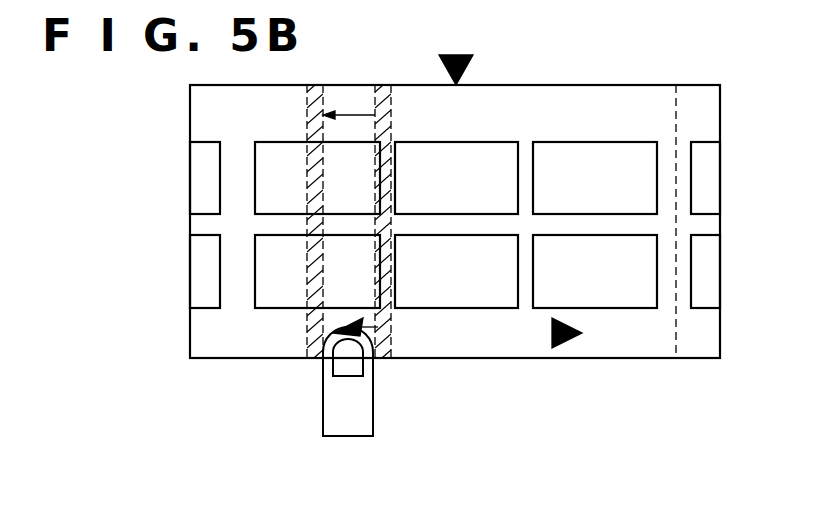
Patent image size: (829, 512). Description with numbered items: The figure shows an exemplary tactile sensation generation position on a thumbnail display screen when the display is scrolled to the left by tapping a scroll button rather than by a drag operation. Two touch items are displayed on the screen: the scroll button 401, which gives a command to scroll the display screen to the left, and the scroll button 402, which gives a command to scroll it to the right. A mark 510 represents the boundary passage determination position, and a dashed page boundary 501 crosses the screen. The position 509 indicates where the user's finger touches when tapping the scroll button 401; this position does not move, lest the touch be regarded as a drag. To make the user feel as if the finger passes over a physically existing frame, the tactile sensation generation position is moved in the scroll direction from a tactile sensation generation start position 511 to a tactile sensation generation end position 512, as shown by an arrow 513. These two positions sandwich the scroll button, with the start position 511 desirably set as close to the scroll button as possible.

The page boundary 501 is at (676, 85).
The mark 510 is at (456, 55).
The tactile sensation generation start position 511 is at (386, 85).
The tactile sensation generation end position 512 is at (315, 85).
The arrow 513 is at (353, 115).
The position 509 is at (347, 360).
The scroll button 401 is at (378, 327).
The scroll button 402 is at (563, 346).